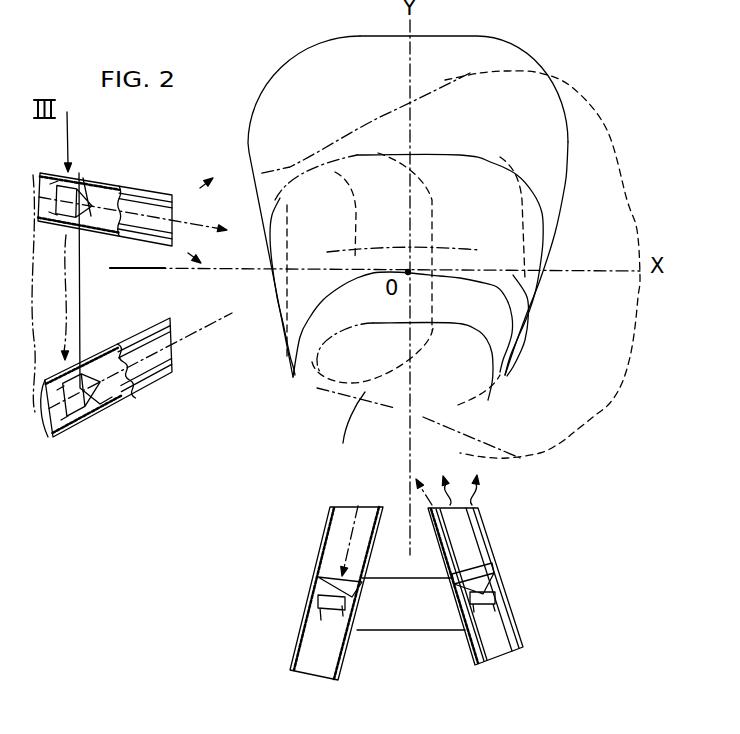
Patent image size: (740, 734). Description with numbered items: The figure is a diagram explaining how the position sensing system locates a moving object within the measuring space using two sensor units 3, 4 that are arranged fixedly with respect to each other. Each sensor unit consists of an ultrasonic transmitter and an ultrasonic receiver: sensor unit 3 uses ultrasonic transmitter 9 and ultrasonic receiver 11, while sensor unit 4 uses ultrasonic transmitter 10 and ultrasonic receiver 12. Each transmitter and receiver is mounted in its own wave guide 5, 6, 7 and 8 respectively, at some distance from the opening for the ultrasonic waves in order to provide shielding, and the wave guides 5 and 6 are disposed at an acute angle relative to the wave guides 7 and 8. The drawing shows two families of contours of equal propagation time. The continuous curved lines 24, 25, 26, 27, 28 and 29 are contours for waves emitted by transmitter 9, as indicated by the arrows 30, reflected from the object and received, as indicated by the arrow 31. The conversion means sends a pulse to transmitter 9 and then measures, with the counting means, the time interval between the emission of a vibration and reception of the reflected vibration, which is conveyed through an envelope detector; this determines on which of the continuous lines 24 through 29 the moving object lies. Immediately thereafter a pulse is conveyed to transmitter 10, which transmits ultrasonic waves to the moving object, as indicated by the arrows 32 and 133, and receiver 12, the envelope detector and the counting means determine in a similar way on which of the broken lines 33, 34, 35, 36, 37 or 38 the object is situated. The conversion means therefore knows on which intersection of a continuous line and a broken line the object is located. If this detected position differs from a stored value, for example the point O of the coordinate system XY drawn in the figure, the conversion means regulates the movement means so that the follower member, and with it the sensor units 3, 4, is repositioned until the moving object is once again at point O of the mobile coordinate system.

The sensor unit 3 is at (450, 614).
The sensor unit 4 is at (63, 297).
The wave guide 5 is at (344, 672).
The wave guide 6 is at (522, 645).
The wave guide 7 is at (147, 400).
The wave guide 8 is at (143, 190).
The ultrasonic transmitter 9 is at (497, 587).
The ultrasonic transmitter 10 is at (76, 182).
The ultrasonic receiver 11 is at (310, 594).
The ultrasonic receiver 12 is at (93, 408).
The continuous curved line 24 is at (452, 412).
The continuous curved line 25 is at (447, 323).
The continuous curved line 26 is at (480, 282).
The continuous curved line 27 is at (480, 250).
The continuous curved line 28 is at (458, 155).
The continuous curved line 29 is at (476, 36).
The arrows 30 is at (447, 478).
The arrow 31 is at (350, 530).
The arrow 32 is at (192, 252).
The broken line 33 is at (288, 252).
The broken line 34 is at (348, 218).
The broken line 35 is at (400, 195).
The broken line 36 is at (430, 218).
The broken line 37 is at (502, 152).
The broken line 38 is at (620, 162).
The arrow 133 is at (93, 382).